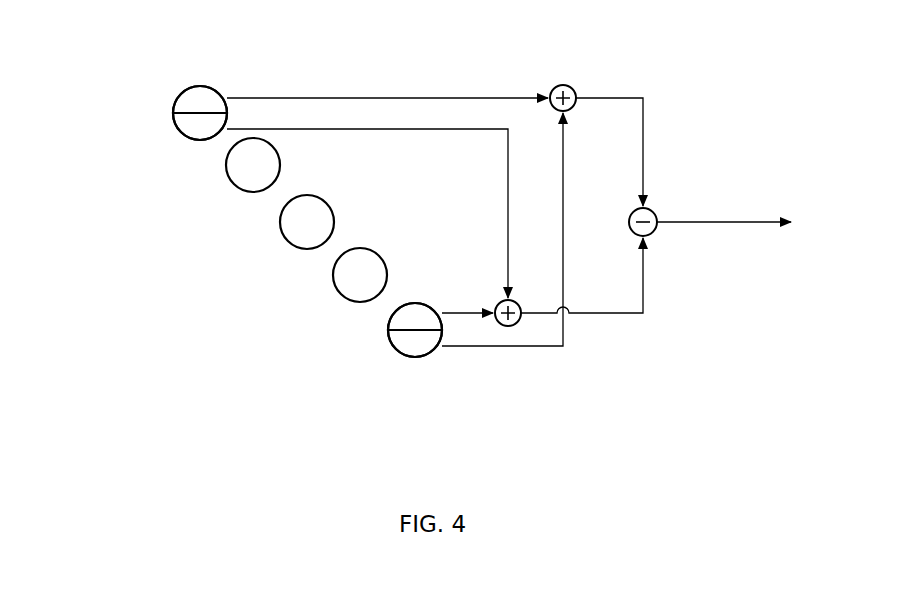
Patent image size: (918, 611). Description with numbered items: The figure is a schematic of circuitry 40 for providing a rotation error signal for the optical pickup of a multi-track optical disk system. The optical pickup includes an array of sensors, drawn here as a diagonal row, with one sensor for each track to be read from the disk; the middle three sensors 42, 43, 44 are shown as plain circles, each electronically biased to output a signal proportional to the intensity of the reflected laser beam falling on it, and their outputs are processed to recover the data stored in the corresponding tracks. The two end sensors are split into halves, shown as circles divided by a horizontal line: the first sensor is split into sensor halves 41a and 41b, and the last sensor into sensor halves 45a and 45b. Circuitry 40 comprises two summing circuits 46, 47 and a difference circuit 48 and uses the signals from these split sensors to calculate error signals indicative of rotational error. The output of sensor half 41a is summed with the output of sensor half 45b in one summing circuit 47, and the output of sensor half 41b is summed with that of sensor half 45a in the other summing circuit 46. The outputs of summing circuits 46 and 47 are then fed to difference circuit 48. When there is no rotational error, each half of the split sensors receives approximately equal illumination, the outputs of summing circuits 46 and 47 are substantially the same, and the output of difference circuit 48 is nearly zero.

The circuitry 40 is at (388, 52).
The sensor half 41a is at (200, 86).
The sensor half 41b is at (177, 133).
The sensor 42 is at (227, 182).
The sensor 43 is at (279, 230).
The sensor 44 is at (336, 292).
The sensor half 45a is at (391, 311).
The sensor half 45b is at (393, 349).
The summing circuit 46 is at (507, 327).
The summing circuit 47 is at (566, 84).
The difference circuit 48 is at (652, 232).